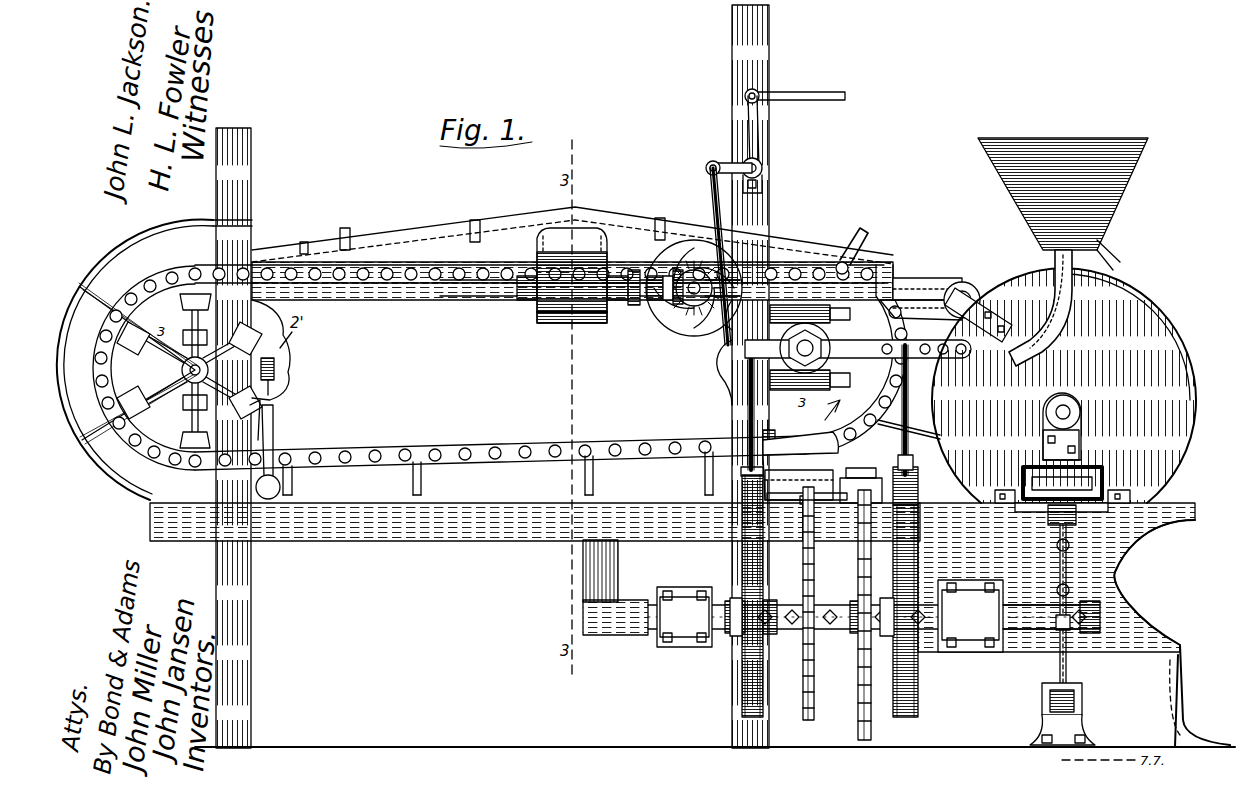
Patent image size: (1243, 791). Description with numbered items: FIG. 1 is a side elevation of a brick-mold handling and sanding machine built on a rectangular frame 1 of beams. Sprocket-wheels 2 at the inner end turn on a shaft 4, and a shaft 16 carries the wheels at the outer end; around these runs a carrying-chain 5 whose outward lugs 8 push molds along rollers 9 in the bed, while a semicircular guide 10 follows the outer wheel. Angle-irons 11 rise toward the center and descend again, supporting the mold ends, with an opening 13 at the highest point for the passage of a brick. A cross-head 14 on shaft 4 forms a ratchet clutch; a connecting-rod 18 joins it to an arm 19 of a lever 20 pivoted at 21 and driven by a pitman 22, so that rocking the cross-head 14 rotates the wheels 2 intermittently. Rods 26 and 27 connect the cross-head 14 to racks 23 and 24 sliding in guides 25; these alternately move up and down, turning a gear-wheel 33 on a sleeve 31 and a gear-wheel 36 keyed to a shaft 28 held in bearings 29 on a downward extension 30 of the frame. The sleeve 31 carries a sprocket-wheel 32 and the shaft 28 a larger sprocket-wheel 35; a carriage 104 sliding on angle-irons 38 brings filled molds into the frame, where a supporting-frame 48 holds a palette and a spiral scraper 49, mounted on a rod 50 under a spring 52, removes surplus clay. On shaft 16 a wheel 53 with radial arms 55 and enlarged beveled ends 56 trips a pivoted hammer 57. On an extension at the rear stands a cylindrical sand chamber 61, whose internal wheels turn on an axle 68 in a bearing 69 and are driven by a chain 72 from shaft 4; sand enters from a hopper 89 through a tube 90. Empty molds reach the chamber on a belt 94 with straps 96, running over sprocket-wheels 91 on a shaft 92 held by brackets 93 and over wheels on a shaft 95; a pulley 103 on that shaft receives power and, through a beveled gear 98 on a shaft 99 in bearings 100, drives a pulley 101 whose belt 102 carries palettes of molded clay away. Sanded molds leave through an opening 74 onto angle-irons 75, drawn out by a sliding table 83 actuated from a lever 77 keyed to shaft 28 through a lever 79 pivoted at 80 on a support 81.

The frame 1 is at (468, 534).
The sprocket-wheels 2 is at (722, 366).
The shaft 4 is at (812, 345).
The carrying-chain 5 is at (540, 456).
The lugs 8 is at (602, 466).
The rollers 9 is at (385, 532).
The semicircular guide 10 is at (95, 296).
The angle-irons 11 is at (428, 235).
The opening 13 is at (560, 232).
The cross head 14 is at (862, 358).
The shaft 16 is at (183, 371).
The connecting-rod 18 is at (712, 196).
The projecting arm 19 is at (725, 168).
The lever 20 is at (765, 136).
The pivot 21 is at (770, 186).
The pitman 22 is at (808, 95).
The rack 23 is at (748, 471).
The rack 24 is at (912, 471).
The guides 25 is at (742, 565).
The rod 26 is at (750, 405).
The rod 27 is at (905, 418).
The shaft 28 is at (1018, 607).
The bearings 29 is at (690, 640).
The downward extension 30 is at (590, 580).
The sleeve 31 is at (780, 632).
The sprocket-wheel 32 is at (816, 582).
The gear-wheel 33 is at (745, 640).
The sprocket-wheel 35 is at (862, 682).
The gear-wheel 36 is at (922, 650).
The angle-irons 38 is at (807, 495).
The supporting-frame 48 is at (888, 480).
The scraper 49 is at (800, 434).
The rod 50 is at (775, 432).
The spring 52 is at (290, 378).
The wheel 53 is at (189, 385).
The radial arms 55 is at (158, 352).
The enlarged portion 56 is at (148, 325).
The hammer 57 is at (272, 448).
The cylindrical chamber 61 is at (1085, 426).
The axle 68 is at (1070, 408).
The bearing 69 is at (1080, 440).
The chain 72 is at (908, 405).
The opening 74 is at (1100, 482).
The angle-irons 75 is at (1020, 508).
The lever 77 is at (1072, 566).
The lever 79 is at (1068, 660).
The pivot 80 is at (1080, 700).
The support 81 is at (1078, 728).
The sliding table 83 is at (1050, 512).
The hopper 89 is at (1118, 195).
The tube 90 is at (1040, 345).
The sprocket-wheels 91 is at (966, 285).
The shaft 92 is at (968, 300).
The brackets 93 is at (1005, 322).
The belt 94 is at (696, 308).
The shaft 95 is at (680, 300).
The straps 96 is at (900, 277).
The beveled gear-wheel 98 is at (652, 300).
The shaft 99 is at (660, 298).
The bearings 100 is at (522, 302).
The pulley 101 is at (540, 320).
The belt 102 is at (568, 325).
The pulley 103 is at (690, 325).
The carriage 104 is at (800, 515).